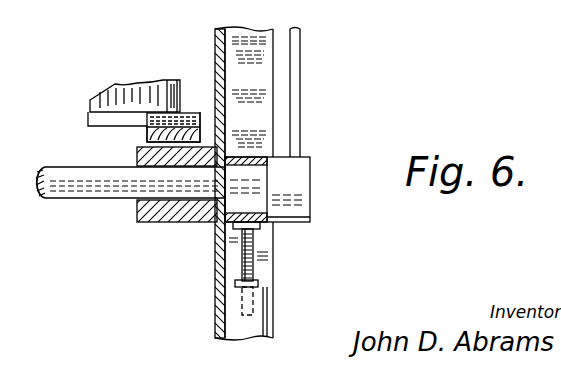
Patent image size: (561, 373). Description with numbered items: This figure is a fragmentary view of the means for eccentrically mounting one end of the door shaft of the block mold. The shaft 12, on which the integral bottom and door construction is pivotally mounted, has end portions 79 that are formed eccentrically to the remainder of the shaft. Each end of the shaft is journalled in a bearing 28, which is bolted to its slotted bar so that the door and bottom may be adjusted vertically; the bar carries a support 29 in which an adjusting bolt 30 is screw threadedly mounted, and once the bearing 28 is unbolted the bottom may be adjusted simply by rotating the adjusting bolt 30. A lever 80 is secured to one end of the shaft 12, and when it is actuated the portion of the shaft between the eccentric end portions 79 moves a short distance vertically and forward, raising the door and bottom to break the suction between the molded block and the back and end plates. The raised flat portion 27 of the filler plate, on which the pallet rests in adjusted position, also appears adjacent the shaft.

The shaft 12 is at (92, 200).
The raised flat portion 27 is at (198, 222).
The bearing 28 is at (250, 157).
The support 29 is at (263, 309).
The adjusting bolt 30 is at (253, 254).
The end portions 79 is at (255, 187).
The lever 80 is at (297, 76).